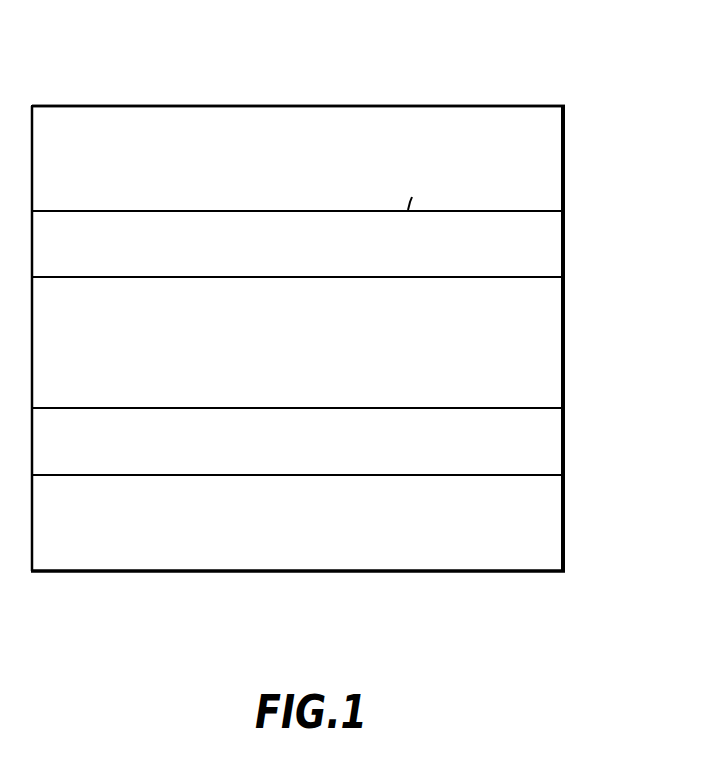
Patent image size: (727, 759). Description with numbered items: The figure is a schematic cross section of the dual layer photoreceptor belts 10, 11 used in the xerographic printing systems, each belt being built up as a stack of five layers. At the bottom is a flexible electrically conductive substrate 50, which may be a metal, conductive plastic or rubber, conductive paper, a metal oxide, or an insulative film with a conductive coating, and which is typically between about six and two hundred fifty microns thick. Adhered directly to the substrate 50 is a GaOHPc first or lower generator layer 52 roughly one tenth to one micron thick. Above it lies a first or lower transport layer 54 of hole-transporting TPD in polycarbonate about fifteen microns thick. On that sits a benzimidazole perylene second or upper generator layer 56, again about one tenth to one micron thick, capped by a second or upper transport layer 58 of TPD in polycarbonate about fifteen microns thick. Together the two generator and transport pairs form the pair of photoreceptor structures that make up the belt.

The photoreceptor belt 10 is at (631, 23).
The photoreceptor belt 11 is at (298, 338).
The conductive substrate 50 is at (546, 549).
The GaOHPc first or lower generator layer 52 is at (550, 455).
The first or lower transport layer 54 is at (553, 357).
The BZP second or upper generator layer 56 is at (553, 259).
The second or upper transport layer 58 is at (553, 178).